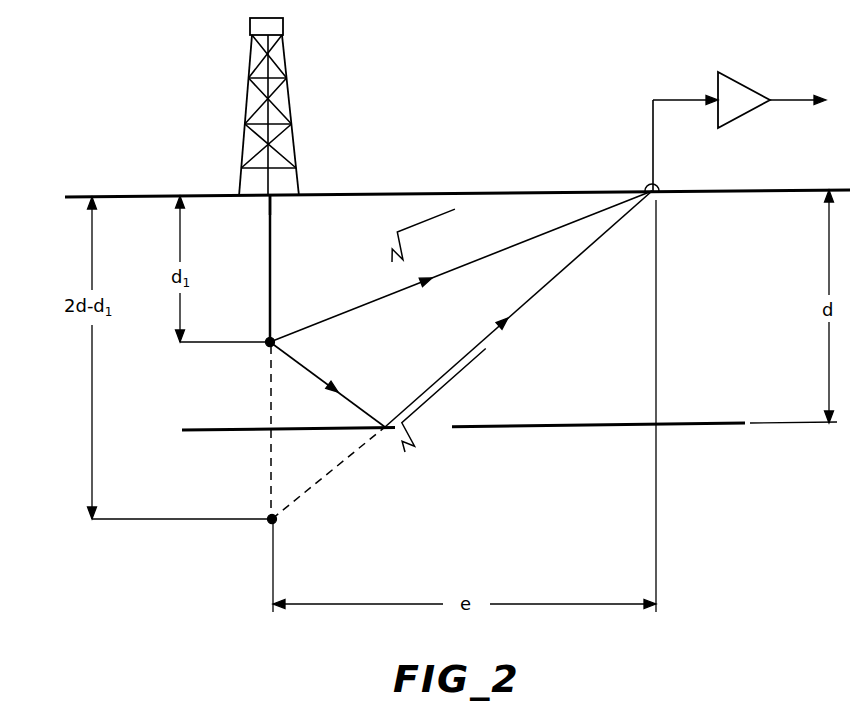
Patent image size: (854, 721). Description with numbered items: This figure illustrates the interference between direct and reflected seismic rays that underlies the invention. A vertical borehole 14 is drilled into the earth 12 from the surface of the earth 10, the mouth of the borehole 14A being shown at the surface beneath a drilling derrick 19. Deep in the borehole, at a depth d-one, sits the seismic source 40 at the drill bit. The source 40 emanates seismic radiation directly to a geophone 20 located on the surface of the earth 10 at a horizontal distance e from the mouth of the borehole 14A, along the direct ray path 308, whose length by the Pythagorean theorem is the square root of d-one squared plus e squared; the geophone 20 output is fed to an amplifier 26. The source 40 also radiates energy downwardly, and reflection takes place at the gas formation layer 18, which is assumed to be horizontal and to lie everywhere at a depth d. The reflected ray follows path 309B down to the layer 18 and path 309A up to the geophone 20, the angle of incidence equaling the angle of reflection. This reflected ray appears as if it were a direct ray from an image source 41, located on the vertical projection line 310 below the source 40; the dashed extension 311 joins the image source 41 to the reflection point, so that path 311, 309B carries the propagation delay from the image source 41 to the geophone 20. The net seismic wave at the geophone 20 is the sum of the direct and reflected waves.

The surface of the earth 10 is at (472, 192).
The earth 12 is at (724, 297).
The vertical borehole 14 is at (269, 222).
The mouth of the borehole 14A is at (275, 198).
The gas formation layer 18 is at (558, 430).
The drilling derrick 19 is at (287, 72).
The geophone 20 is at (647, 185).
The amplifier 26 is at (716, 80).
The seismic source 40 is at (273, 338).
The image source 41 is at (276, 523).
The ray path 308 is at (480, 260).
The reflected ray path 309A is at (462, 358).
The reflected ray path 309B is at (302, 366).
The vertical projection line from source to image 310 is at (268, 462).
The path 311 is at (332, 480).